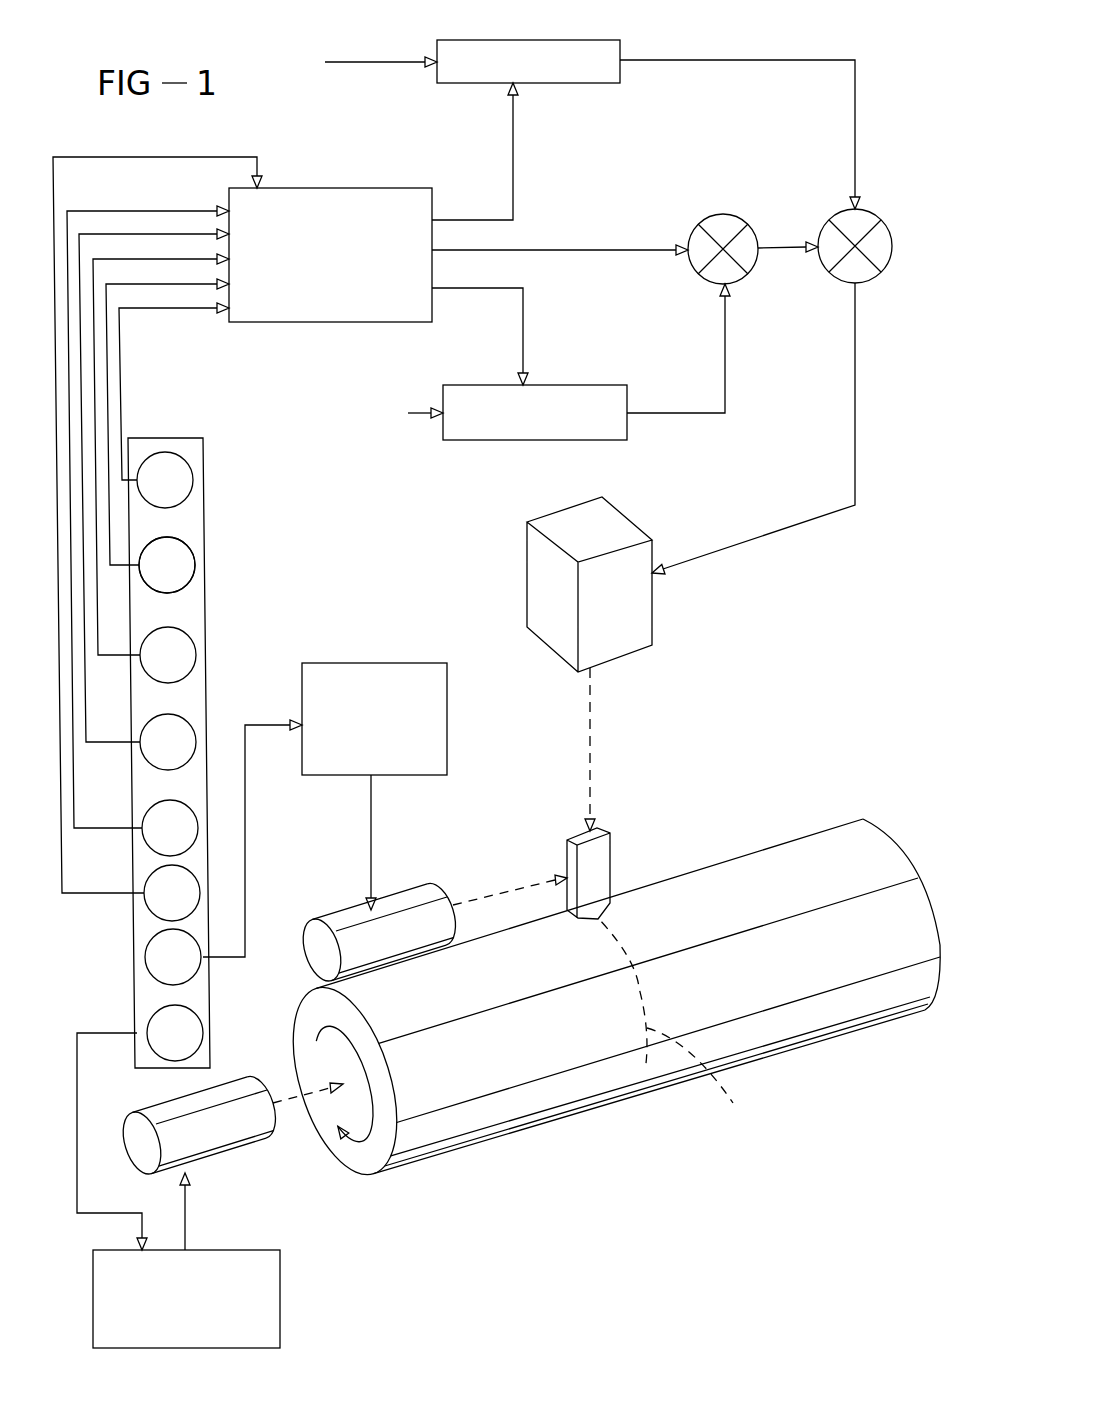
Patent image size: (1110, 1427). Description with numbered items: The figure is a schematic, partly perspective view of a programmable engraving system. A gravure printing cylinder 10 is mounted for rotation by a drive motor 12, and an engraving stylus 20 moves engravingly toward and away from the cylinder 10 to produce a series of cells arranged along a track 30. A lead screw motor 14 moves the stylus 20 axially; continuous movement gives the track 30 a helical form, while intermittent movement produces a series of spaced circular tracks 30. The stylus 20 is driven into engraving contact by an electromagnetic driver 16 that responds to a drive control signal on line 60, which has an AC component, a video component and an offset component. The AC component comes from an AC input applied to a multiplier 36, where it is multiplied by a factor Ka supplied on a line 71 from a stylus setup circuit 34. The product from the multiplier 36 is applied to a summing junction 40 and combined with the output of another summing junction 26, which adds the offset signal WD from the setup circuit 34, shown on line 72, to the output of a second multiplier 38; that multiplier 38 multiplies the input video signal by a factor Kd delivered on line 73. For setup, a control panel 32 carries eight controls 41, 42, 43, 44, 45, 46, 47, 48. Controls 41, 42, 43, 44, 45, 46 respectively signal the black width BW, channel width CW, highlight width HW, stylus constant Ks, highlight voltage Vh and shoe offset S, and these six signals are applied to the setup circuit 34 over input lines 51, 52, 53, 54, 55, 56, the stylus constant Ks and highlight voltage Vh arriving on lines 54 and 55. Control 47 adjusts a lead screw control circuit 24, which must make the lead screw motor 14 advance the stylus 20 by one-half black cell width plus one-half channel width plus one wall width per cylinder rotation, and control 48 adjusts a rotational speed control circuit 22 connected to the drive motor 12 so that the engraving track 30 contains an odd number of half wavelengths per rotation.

The gravure printing cylinder 10 is at (718, 868).
The drive motor 12 is at (233, 1147).
The lead screw motor 14 is at (432, 883).
The electromagnetic driver 16 is at (525, 560).
The engraving stylus 20 is at (632, 835).
The rotational speed control circuit 22 is at (280, 1310).
The lead screw control circuit 24 is at (447, 716).
The summing junction 26 is at (730, 213).
The track 30 is at (733, 1103).
The control panel 32 is at (195, 565).
The stylus setup circuit 34 is at (332, 188).
The multiplier 36 is at (550, 84).
The second multiplier 38 is at (563, 372).
The summing junction 40 is at (845, 207).
The black width control 41 is at (193, 483).
The channel width control 42 is at (203, 525).
The highlight width control 43 is at (203, 603).
The stylus constant control 44 is at (190, 720).
The highlight voltage control 45 is at (198, 828).
The shoe offset control 46 is at (152, 908).
The lead screw adjustment control 47 is at (198, 938).
The rotational speed adjustment control 48 is at (203, 1033).
The setup input line 51 is at (121, 413).
The setup input line 52 is at (108, 392).
The setup input line 53 is at (97, 362).
The input line 54 is at (107, 234).
The input line 55 is at (157, 211).
The setup input line 56 is at (223, 157).
The drive control signal line 60 is at (742, 540).
The Ka line 71 is at (513, 140).
The WD signal line 72 is at (612, 250).
The Kd line 73 is at (523, 340).